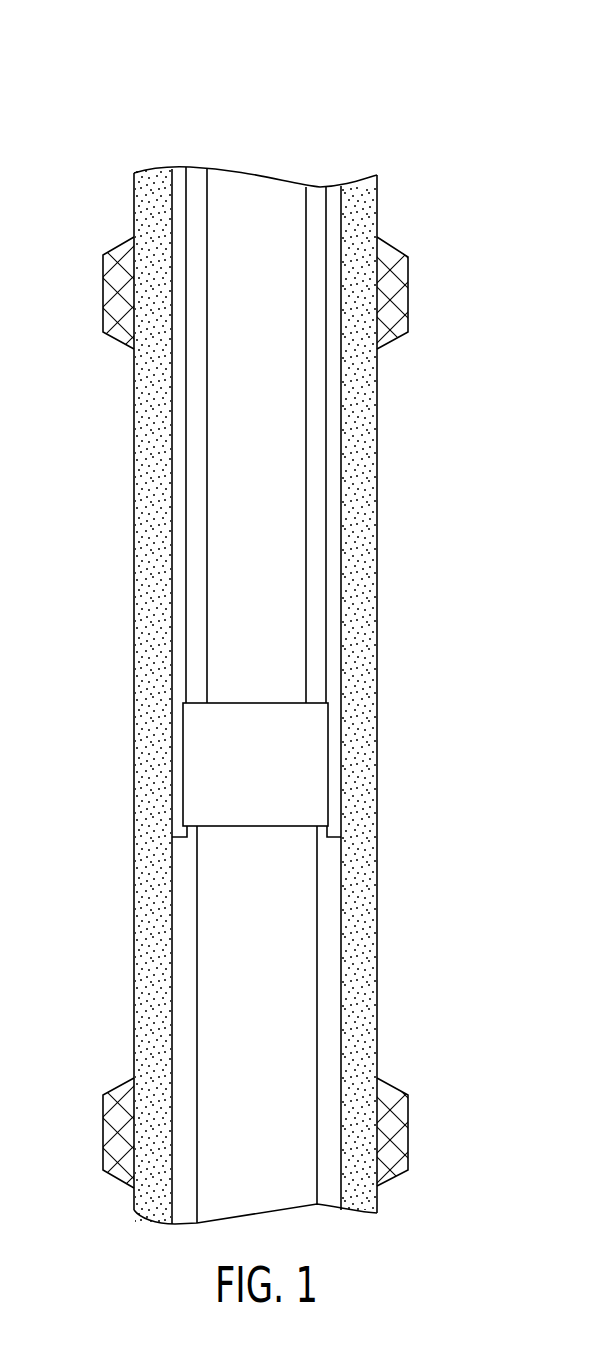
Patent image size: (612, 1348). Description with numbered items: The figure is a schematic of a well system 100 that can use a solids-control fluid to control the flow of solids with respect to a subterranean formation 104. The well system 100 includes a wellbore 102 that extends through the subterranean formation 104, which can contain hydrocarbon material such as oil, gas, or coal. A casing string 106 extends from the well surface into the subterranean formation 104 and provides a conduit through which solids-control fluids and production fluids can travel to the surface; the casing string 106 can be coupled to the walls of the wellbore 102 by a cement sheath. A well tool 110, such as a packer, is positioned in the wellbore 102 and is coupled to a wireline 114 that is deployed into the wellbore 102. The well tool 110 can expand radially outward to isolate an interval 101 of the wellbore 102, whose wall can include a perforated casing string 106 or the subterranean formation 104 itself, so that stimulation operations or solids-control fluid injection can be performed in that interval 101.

The well system 100 is at (104, 88).
The interval 101 is at (177, 978).
The wellbore 102 is at (170, 633).
The subterranean formation 104 is at (378, 473).
The casing string 106 is at (195, 477).
The well tool 110 is at (207, 780).
The wireline 114 is at (255, 193).